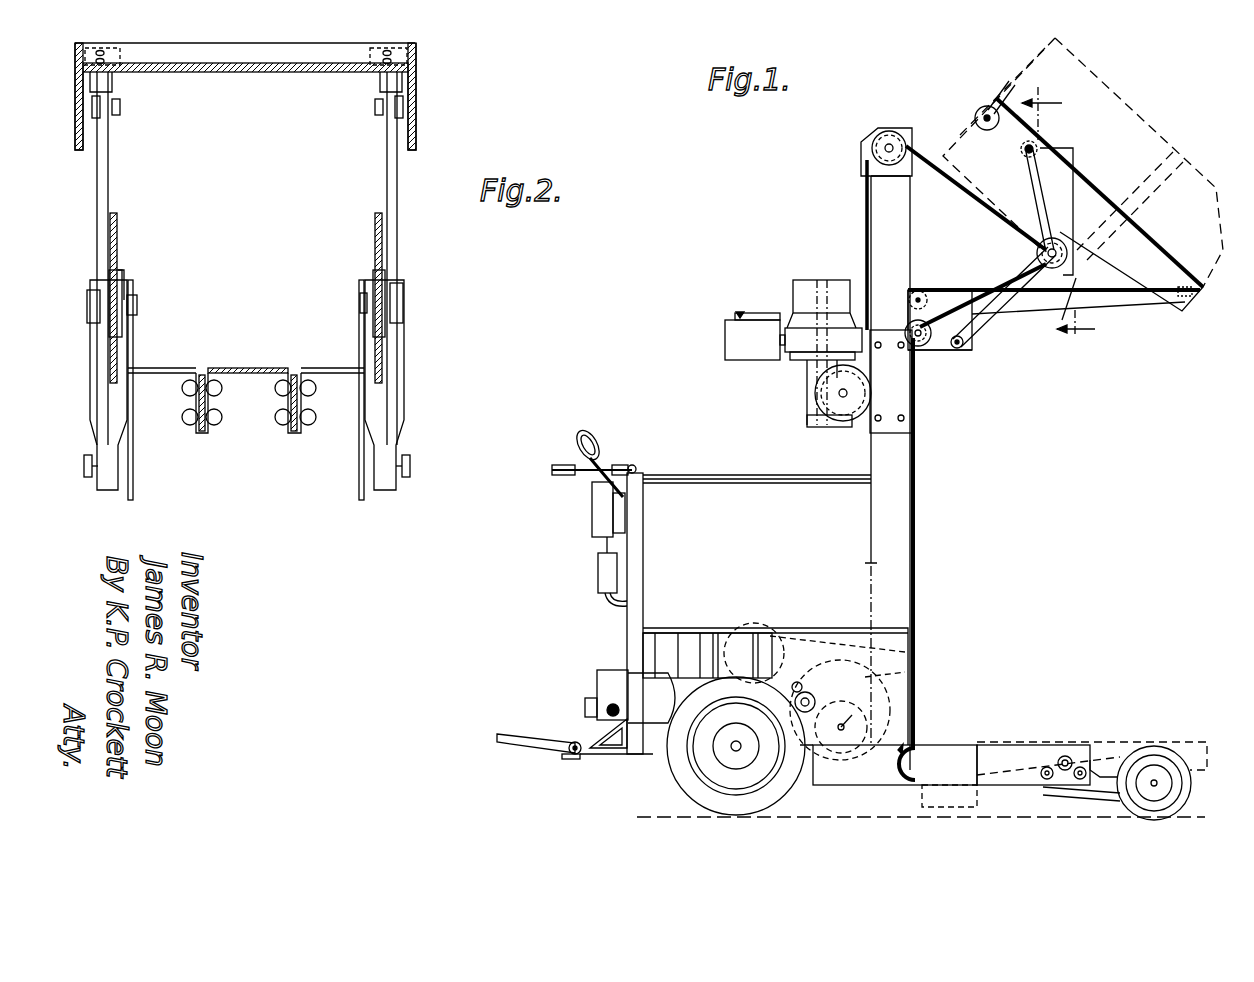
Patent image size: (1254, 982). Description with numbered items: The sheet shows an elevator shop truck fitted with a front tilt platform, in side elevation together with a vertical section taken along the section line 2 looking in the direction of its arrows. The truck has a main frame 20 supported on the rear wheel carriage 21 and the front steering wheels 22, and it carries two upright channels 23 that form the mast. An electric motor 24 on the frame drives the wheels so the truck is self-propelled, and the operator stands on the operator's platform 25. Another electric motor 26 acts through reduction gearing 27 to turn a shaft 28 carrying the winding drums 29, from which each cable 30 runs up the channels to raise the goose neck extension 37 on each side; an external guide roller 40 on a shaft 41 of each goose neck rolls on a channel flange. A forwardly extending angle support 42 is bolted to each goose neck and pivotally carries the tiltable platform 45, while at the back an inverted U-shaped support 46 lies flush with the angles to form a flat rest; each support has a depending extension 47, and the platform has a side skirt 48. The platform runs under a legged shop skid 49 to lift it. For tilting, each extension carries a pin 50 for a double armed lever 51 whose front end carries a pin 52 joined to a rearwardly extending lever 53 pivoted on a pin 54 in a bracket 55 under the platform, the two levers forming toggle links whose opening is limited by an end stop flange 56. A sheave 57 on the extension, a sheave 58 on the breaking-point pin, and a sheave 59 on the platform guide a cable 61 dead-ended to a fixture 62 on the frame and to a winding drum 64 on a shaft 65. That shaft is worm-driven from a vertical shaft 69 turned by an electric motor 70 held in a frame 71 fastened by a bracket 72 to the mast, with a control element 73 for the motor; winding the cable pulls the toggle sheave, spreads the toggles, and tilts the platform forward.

In FIG. 1, the section line 2— 2 is at (1067, 214).
In FIG. 1, the main frame 20 is at (1030, 750).
In FIG. 1, the rear wheel carriage 21 is at (680, 760).
In FIG. 1, the front steering wheels 22 is at (1155, 755).
In FIG. 1, the upright channels 23 is at (888, 443).
In FIG. 1, the electric motor 24 is at (600, 690).
In FIG. 1, the operator's platform 25 is at (505, 735).
In FIG. 1, the electric motor 26 is at (748, 625).
In FIG. 1, the reduction gearing 27 is at (900, 635).
In FIG. 1, the shaft 28 is at (880, 697).
In FIG. 1, the winding drums 29 is at (880, 668).
In FIG. 1, the cable 30 is at (876, 566).
In FIG. 2, the goose neck extension 37 is at (195, 422).
In FIG. 1, the external guide roller 40 is at (974, 285).
In FIG. 1, the shaft 41 is at (946, 278).
In FIG. 2, the angle support 42 is at (247, 355).
In FIG. 1, the angle support 42 is at (1131, 730).
In FIG. 2, the platform 45 is at (248, 70).
In FIG. 2, the inverted U-shaped support 46 is at (186, 355).
In FIG. 2, the depending extension 47 is at (133, 497).
In FIG. 1, the depending extension 47 is at (930, 352).
In FIG. 2, the skirt 48 is at (80, 150).
In FIG. 1, the skirt 48 is at (1137, 258).
In FIG. 1, the legged shop skid 49 is at (1190, 107).
In FIG. 2, the pin 50 is at (84, 468).
In FIG. 1, the pin 50 is at (962, 348).
In FIG. 2, the double armed lever 51 is at (90, 345).
In FIG. 1, the double armed lever 51 is at (985, 325).
In FIG. 2, the pin 52 is at (133, 303).
In FIG. 1, the pin 52 is at (885, 132).
In FIG. 2, the lever 53 is at (398, 182).
In FIG. 1, the lever 53 is at (1028, 180).
In FIG. 2, the pin 54 is at (166, 128).
In FIG. 1, the pin 54 is at (1024, 152).
In FIG. 2, the bracket 55 is at (112, 88).
In FIG. 2, the end stop flange 56 is at (87, 307).
In FIG. 1, the end stop flange 56 is at (1062, 320).
In FIG. 1, the sheave 57 is at (922, 348).
In FIG. 2, the sheave 58 is at (125, 275).
In FIG. 1, the sheave 58 is at (1043, 245).
In FIG. 1, the sheave 59 is at (975, 118).
In FIG. 2, the cable 61 is at (118, 238).
In FIG. 1, the cable 61 is at (914, 503).
In FIG. 1, the fixture 62 is at (917, 755).
In FIG. 1, the winding drum 64 is at (835, 420).
In FIG. 1, the shaft 65 is at (902, 140).
In FIG. 1, the vertical shaft 69 is at (805, 378).
In FIG. 1, the electric motor 70 is at (808, 282).
In FIG. 1, the frame 71 is at (858, 330).
In FIG. 1, the bracket 72 is at (1000, 92).
In FIG. 1, the control element 73 is at (740, 310).